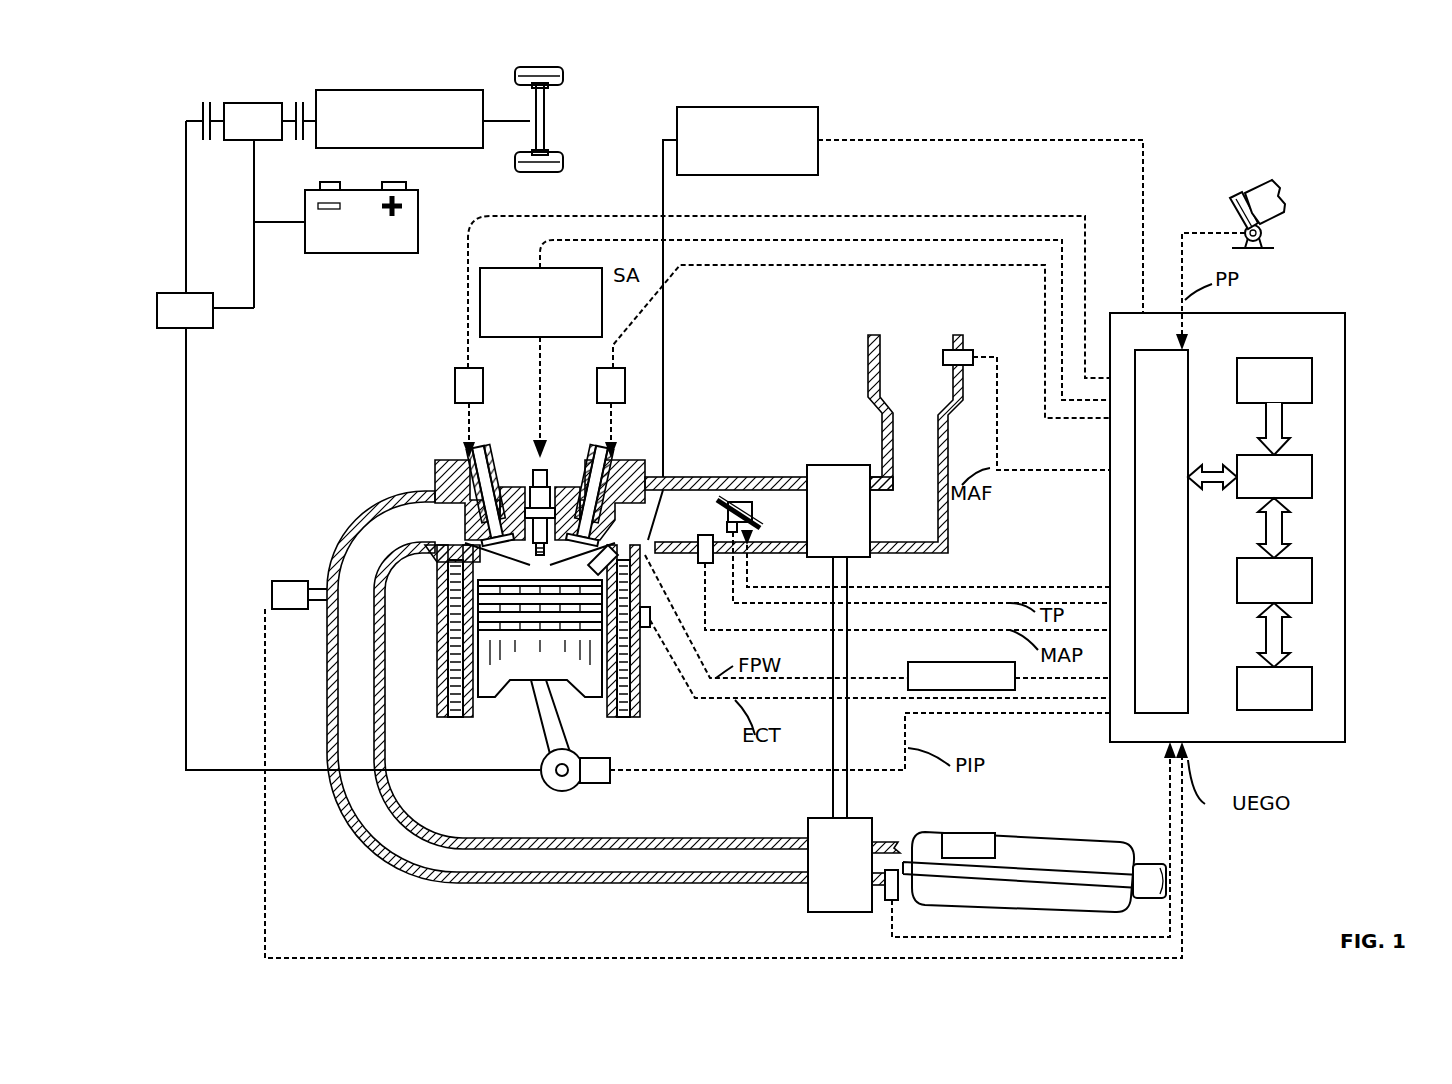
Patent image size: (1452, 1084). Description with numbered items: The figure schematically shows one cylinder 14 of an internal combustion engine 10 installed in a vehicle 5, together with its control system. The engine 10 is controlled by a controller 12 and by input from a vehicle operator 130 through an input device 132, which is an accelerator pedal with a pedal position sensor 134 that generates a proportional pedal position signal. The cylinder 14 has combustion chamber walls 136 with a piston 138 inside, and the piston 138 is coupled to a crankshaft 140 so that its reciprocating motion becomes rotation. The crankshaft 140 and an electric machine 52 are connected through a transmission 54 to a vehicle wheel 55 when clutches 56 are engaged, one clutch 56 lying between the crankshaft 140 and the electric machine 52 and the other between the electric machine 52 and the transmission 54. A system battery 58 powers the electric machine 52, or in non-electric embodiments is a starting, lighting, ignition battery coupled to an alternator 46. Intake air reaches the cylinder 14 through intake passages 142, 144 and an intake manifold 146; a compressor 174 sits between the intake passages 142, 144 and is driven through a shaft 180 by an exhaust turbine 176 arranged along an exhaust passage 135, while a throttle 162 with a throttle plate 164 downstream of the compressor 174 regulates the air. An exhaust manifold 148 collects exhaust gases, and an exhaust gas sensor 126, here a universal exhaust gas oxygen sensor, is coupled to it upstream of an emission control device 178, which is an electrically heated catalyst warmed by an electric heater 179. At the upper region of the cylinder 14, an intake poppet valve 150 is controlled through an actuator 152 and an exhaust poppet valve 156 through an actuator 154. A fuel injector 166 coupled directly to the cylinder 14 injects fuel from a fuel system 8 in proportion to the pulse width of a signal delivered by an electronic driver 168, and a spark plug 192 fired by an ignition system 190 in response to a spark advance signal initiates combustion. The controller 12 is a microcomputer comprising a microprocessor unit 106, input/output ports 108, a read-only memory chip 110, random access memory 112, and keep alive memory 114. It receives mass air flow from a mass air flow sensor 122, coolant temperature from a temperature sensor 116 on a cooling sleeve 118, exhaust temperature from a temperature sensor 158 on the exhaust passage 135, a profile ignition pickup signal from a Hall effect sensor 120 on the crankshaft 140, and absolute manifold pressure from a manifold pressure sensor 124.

The vehicle 5 is at (1395, 135).
The fuel system 8 is at (795, 107).
The internal combustion engine 10 is at (360, 408).
The controller 12 is at (1345, 320).
The cylinder 14 is at (460, 570).
The alternator 46 is at (160, 328).
The electric machine 52 is at (238, 103).
The transmission 54 is at (460, 148).
The vehicle wheel 55 is at (515, 72).
The clutch 56 is at (203, 102).
The system battery 58 is at (355, 253).
The microprocessor unit 106 is at (1312, 478).
The input/output ports 108 is at (1190, 360).
The read-only memory chip 110 is at (1312, 378).
The random access memory 112 is at (1312, 585).
The keep alive memory 114 is at (1312, 690).
The temperature sensor 116 is at (655, 628).
The cooling sleeve 118 is at (636, 718).
The Hall effect sensor 120 is at (598, 785).
The mass air flow sensor 122 is at (962, 350).
The MAP sensor 124 is at (710, 565).
The exhaust gas sensor 126 is at (272, 583).
The vehicle operator 130 is at (1292, 205).
The input device 132 is at (1238, 200).
The pedal position sensor 134 is at (1265, 236).
The exhaust passage 135 is at (725, 872).
The combustion chamber walls 136 is at (480, 720).
The piston 138 is at (522, 665).
The crankshaft 140 is at (548, 790).
The intake passage 142 is at (915, 444).
The intake passage 144 is at (789, 516).
The intake manifold 146 is at (726, 515).
The exhaust manifold 148 is at (591, 680).
The intake poppet valve 150 is at (552, 512).
The actuator 152 is at (597, 388).
The actuator 154 is at (455, 380).
The exhaust poppet valve 156 is at (465, 520).
The temperature sensor 158 is at (888, 905).
The throttle 162 is at (757, 500).
The throttle plate 164 is at (722, 498).
The fuel injector 166 is at (600, 547).
The electronic driver 168 is at (912, 662).
The compressor 174 is at (850, 511).
The exhaust turbine 176 is at (854, 865).
The emission control device 178 is at (1105, 842).
The electric heater 179 is at (965, 833).
The shaft 180 is at (847, 790).
The ignition system 190 is at (496, 268).
The spark plug 192 is at (538, 500).